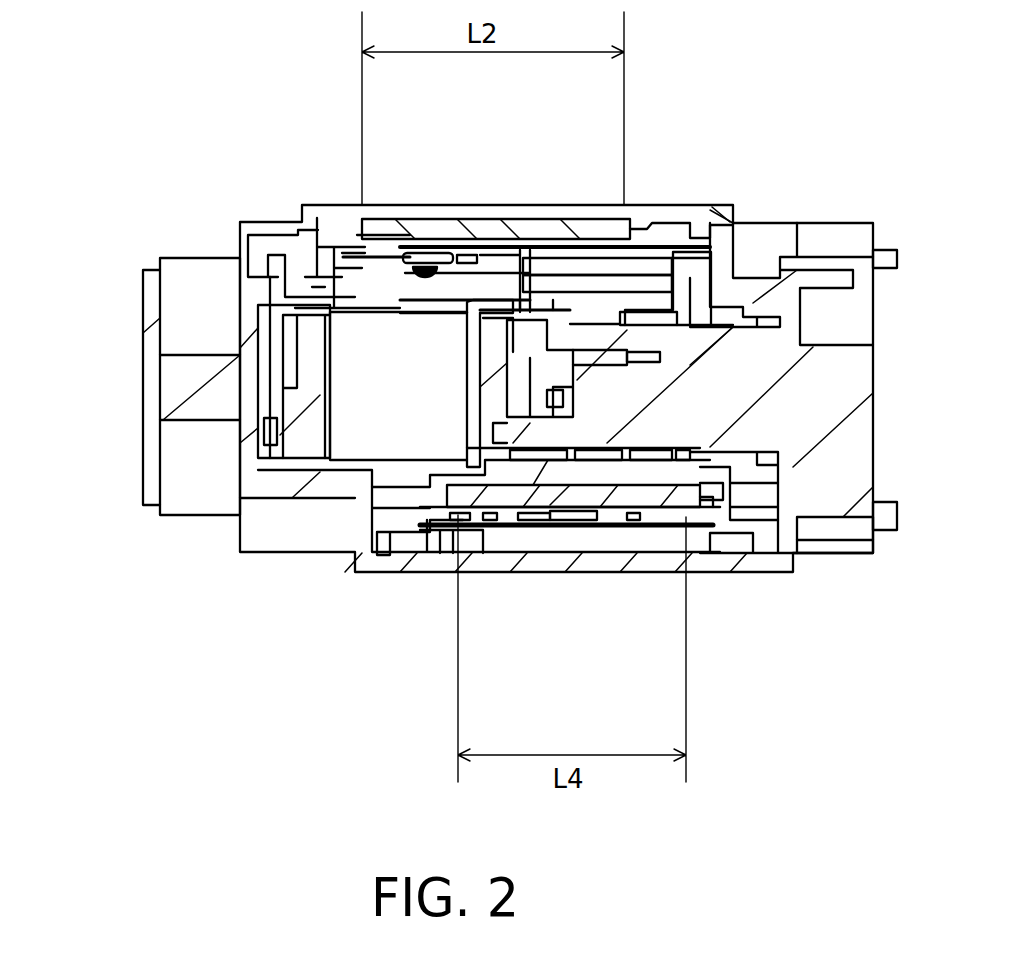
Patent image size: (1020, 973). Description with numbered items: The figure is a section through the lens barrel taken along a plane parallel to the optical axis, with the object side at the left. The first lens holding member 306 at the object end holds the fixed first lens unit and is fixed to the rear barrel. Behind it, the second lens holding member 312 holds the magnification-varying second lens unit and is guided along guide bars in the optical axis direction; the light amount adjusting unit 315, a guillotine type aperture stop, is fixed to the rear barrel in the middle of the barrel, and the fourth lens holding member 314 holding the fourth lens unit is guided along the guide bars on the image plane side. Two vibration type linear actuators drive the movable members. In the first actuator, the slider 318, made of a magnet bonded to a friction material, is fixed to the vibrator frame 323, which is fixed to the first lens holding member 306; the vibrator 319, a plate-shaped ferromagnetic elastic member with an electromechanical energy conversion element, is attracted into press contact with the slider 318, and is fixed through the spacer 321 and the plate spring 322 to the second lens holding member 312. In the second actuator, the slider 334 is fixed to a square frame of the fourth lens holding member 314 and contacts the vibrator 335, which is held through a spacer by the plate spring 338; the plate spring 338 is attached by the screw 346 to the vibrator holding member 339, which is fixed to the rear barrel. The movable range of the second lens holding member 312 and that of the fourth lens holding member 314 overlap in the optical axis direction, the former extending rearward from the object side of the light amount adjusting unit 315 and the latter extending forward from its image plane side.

The first lens holding member 306 is at (170, 318).
The second lens holding member 312 is at (313, 287).
The fourth lens holding member 314 is at (667, 560).
The light amount adjusting unit 315 is at (487, 396).
The slider 318 is at (462, 215).
The vibrator 319 is at (412, 218).
The spacer 321 is at (353, 245).
The plate spring 322 is at (485, 242).
The vibrator frame 323 is at (663, 213).
The slider 334 is at (672, 497).
The vibrator 335 is at (540, 530).
The plate spring 338 is at (645, 505).
The vibrator holding member 339 is at (747, 560).
The screw 346 is at (462, 560).